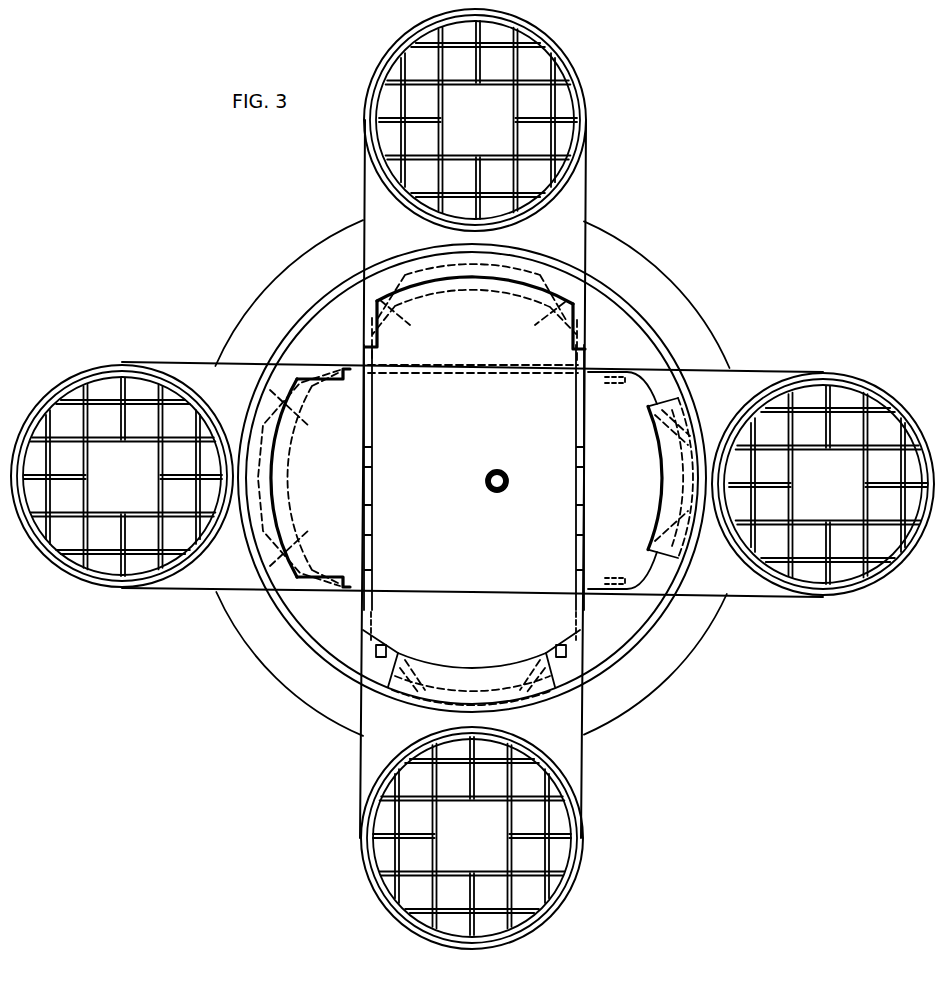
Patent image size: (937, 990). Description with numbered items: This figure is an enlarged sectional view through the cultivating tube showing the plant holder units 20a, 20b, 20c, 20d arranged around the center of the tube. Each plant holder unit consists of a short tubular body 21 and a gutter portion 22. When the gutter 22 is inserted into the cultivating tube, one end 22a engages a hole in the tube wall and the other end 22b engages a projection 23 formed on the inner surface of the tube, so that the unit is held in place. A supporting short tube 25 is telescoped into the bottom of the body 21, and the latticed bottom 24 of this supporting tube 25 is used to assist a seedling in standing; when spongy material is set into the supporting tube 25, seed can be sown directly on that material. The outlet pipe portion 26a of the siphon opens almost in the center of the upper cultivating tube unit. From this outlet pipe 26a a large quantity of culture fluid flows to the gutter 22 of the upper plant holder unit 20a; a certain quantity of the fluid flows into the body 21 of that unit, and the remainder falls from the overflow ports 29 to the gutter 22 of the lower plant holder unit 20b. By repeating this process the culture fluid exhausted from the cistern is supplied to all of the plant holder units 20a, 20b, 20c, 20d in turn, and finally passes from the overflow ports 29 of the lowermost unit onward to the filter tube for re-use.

The upper plant holder unit 20a is at (578, 193).
The lower plant holder unit 20b is at (197, 589).
The plant holder unit 20c is at (362, 755).
The plant holder unit 20d is at (748, 370).
The short tubular body 21 is at (578, 120).
The gutter portion 22 is at (594, 372).
The one end of gutter 22a is at (570, 297).
The other end of gutter 22b is at (673, 540).
The projection 23 is at (660, 468).
The latticed bottom 24 is at (440, 142).
The supporting short tube 25 is at (562, 84).
The outlet pipe portion 26a is at (504, 491).
The overflow ports 29 is at (368, 520).